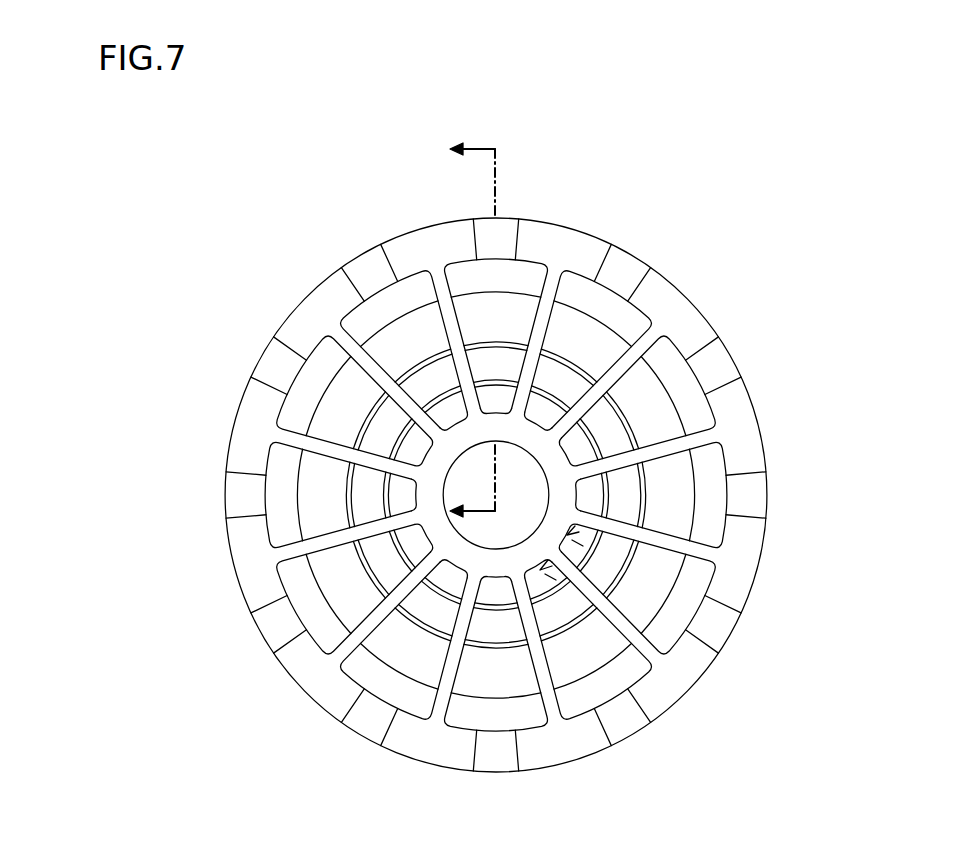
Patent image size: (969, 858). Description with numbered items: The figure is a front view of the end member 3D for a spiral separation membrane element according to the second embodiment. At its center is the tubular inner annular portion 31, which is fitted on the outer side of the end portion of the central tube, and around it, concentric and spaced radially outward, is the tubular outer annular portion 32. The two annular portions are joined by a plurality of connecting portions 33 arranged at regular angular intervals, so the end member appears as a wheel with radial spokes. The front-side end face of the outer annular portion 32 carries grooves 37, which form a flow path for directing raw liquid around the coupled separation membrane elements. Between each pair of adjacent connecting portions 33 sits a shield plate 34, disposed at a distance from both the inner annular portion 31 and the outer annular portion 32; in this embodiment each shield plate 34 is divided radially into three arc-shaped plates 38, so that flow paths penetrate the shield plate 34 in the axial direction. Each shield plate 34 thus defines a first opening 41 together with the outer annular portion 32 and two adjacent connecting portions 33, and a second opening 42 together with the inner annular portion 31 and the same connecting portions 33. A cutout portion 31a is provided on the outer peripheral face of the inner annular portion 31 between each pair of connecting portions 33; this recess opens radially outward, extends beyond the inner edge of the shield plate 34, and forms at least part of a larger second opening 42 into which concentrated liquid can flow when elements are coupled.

The end member 3D is at (755, 207).
The inner annular portion 31 is at (440, 470).
The cutout portion 31a is at (495, 578).
The outer annular portion 32 is at (418, 250).
The connecting portions 33 is at (457, 343).
The shield plate 34 is at (629, 495).
The groove 37 is at (500, 237).
The arc-shaped plates 38 is at (590, 450).
The first opening 41 is at (682, 377).
The second opening 42 is at (540, 570).